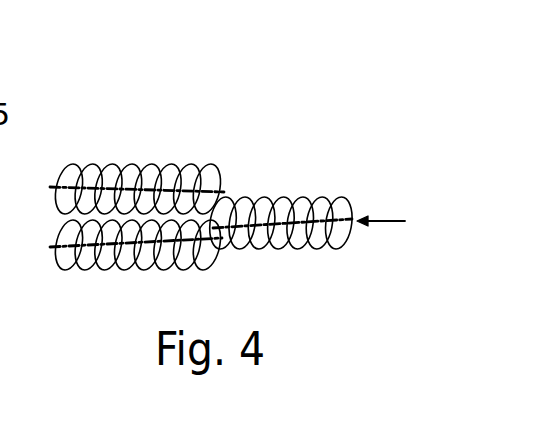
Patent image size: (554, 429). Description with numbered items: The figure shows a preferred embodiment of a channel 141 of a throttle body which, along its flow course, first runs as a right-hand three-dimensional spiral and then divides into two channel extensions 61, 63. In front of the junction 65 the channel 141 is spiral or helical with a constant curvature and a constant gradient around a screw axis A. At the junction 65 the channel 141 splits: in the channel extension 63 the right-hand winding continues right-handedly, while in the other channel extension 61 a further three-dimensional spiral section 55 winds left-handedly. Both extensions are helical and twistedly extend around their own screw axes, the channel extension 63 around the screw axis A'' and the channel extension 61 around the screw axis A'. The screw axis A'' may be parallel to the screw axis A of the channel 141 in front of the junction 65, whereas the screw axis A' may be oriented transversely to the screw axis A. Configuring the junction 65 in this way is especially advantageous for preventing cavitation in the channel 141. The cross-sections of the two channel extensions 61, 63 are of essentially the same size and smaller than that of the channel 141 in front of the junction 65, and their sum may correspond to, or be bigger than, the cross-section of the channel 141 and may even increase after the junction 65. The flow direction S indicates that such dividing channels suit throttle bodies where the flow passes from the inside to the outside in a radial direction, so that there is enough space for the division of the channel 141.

The channel 141 is at (255, 137).
The three-dimensional spiral section 55 is at (222, 160).
The channel extension 61 is at (182, 143).
The channel extension 63 is at (218, 267).
The junction 65 is at (220, 262).
The flow direction S is at (385, 220).
The screw axis A is at (296, 279).
The screw axis A' is at (119, 145).
The screw axis A'' is at (115, 295).